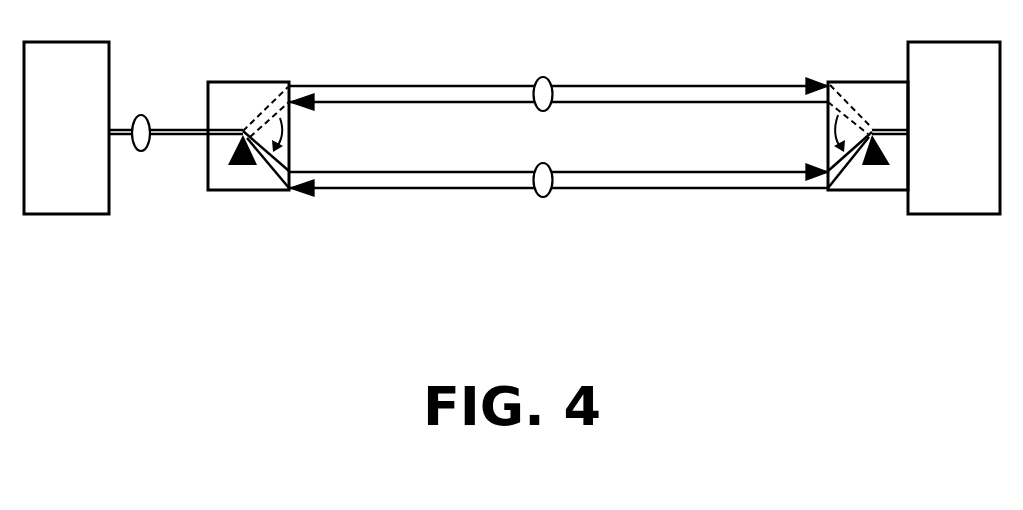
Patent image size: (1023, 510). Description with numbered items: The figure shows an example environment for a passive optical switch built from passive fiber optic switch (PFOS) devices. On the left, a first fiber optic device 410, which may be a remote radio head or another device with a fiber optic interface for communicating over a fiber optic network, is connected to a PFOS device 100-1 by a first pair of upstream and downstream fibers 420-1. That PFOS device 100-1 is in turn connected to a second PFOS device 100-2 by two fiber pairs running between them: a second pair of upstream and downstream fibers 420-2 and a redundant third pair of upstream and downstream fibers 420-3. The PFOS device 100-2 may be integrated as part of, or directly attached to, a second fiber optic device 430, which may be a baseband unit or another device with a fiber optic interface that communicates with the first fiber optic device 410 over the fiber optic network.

The first fiber optic device 410 is at (48, 141).
The second fiber optic device 430 is at (935, 141).
The PFOS device 100-1 is at (252, 80).
The PFOS device 100-2 is at (873, 80).
The first pair of upstream and downstream fibers 420-1 is at (145, 116).
The second pair of upstream and downstream fibers 420-2 is at (547, 77).
The redundant third pair of upstream and downstream fibers 420-3 is at (545, 197).